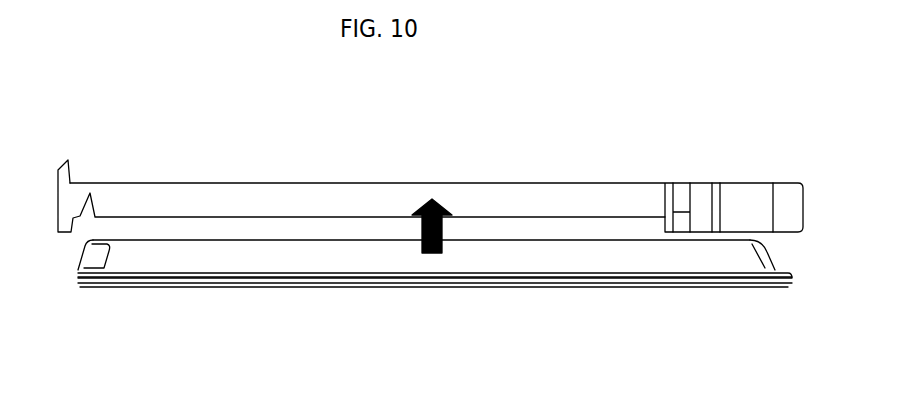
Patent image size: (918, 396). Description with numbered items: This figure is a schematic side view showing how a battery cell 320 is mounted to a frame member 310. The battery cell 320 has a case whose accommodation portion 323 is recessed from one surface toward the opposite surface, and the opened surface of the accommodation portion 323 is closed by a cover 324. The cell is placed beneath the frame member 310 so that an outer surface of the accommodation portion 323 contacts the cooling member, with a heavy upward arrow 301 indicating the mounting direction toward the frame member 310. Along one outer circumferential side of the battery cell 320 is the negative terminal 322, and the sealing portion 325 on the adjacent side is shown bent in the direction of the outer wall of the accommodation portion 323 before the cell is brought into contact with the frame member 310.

The frame member 310 is at (220, 134).
The direction arrow 301 is at (446, 225).
The battery cell 320 is at (413, 293).
The negative terminal 322 is at (488, 284).
The accommodation portion 323 is at (604, 241).
The cover 324 is at (705, 287).
The sealing portion 325 is at (78, 270).